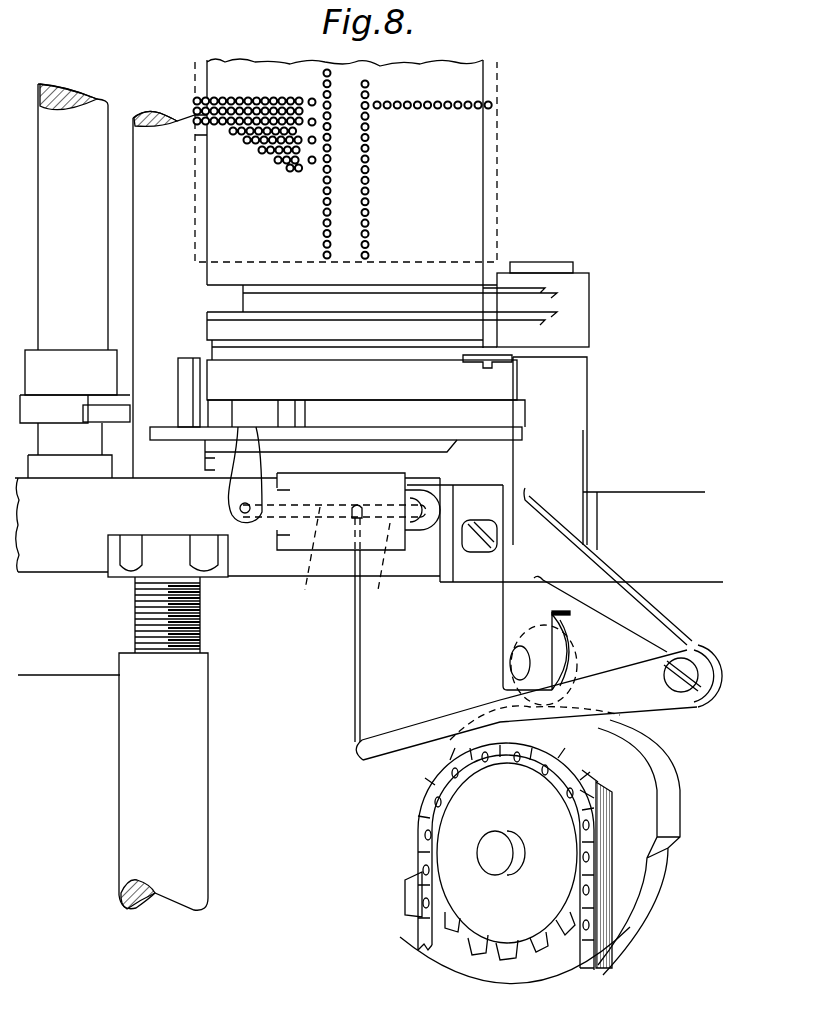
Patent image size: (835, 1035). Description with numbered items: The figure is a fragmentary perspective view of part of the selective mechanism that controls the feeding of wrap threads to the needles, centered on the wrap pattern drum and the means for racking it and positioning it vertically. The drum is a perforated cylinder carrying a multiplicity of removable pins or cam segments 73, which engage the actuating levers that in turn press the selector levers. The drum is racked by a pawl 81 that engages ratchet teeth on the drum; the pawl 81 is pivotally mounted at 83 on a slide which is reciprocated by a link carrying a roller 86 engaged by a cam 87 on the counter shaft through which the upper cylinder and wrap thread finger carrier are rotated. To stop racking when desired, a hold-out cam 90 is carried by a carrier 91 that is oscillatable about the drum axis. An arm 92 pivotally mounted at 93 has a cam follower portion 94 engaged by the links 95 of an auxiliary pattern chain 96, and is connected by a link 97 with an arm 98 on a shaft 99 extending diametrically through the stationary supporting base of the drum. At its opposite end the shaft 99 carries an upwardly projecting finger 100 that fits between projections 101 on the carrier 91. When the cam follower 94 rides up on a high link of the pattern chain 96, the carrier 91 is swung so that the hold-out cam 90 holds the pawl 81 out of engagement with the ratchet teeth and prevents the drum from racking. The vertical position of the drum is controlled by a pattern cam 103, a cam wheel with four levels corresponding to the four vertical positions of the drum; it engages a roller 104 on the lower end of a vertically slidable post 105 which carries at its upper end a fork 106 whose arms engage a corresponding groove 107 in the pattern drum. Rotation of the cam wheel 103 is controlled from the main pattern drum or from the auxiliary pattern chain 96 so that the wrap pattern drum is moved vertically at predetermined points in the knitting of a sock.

The removable pins or cam segments 73 is at (253, 138).
The pawl 81 is at (362, 380).
The pivot of the pawl 83 is at (472, 360).
The roller 86 is at (96, 405).
The cam 87 is at (42, 405).
The hold-out cam 90 is at (178, 394).
The carrier 91 is at (370, 436).
The arm 92 is at (385, 730).
The pivot of the arm 93 is at (693, 703).
The cam follower portion 94 is at (497, 748).
The links 95 is at (562, 760).
The auxiliary pattern chain 96 is at (418, 928).
The link 97 is at (362, 652).
The arm 98 is at (374, 584).
The shaft 99 is at (310, 584).
The upwardly projecting finger 100 is at (240, 488).
The projections 101 is at (272, 412).
The pattern cam 103 is at (660, 888).
The roller 104 is at (572, 656).
The vertically slidable post 105 is at (578, 262).
The fork 106 is at (500, 302).
The groove 107 is at (212, 288).